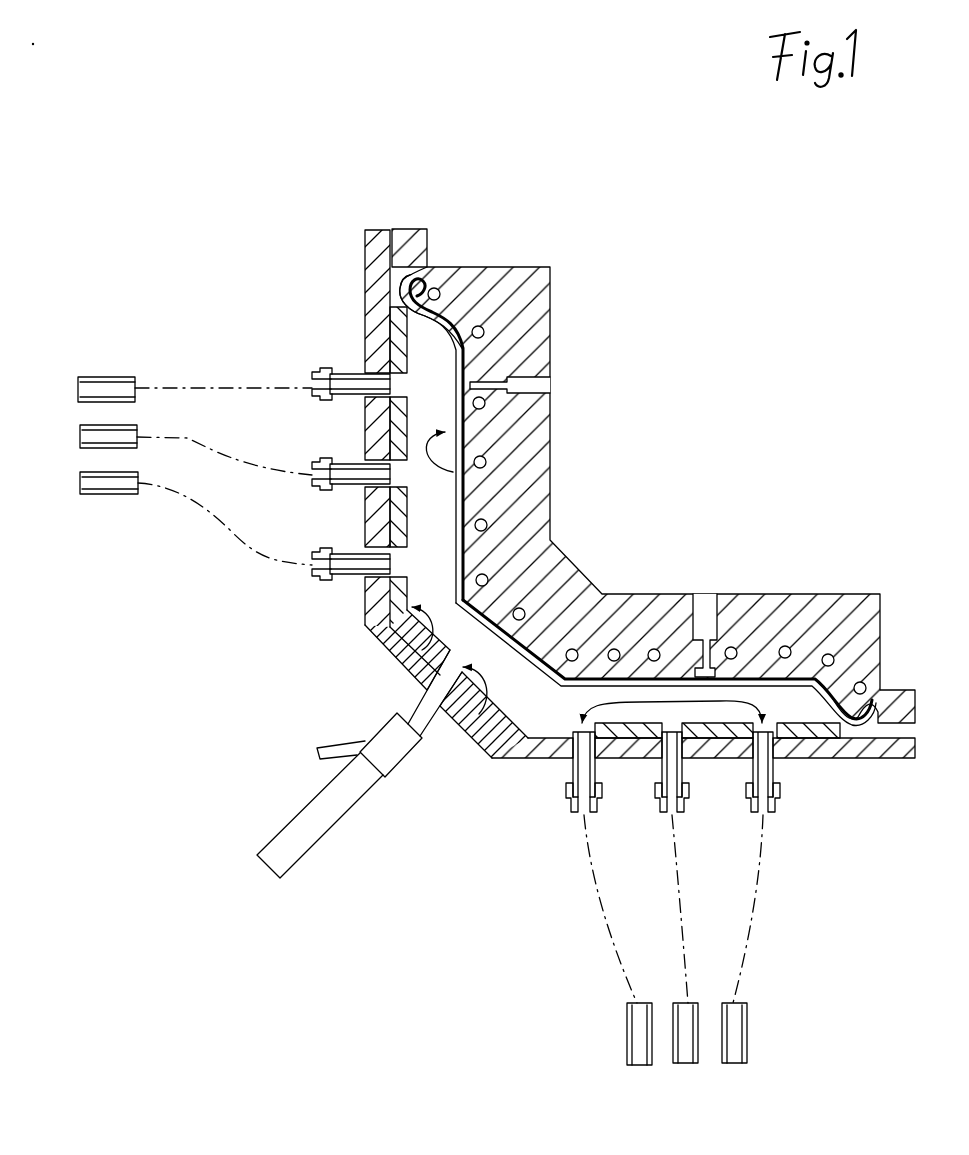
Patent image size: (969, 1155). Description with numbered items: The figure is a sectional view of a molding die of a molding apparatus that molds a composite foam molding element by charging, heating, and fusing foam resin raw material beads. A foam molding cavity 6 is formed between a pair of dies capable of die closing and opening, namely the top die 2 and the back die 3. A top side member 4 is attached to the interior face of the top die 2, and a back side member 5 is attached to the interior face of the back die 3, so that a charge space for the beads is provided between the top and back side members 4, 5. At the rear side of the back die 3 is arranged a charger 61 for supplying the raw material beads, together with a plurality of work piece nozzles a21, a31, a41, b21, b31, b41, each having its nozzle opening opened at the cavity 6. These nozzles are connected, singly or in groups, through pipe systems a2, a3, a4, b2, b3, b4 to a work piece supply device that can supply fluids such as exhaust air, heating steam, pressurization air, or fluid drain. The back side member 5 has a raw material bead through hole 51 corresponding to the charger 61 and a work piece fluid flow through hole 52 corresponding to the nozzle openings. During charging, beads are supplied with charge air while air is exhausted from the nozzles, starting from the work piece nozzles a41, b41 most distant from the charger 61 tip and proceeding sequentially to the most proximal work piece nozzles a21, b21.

The top die 2 is at (545, 310).
The back die 3 is at (372, 301).
The top side member 4 is at (470, 466).
The back side member 5 is at (402, 665).
The foam molding cavity 6 is at (437, 518).
The raw material bead through hole 51 is at (490, 720).
The work piece fluid flow through hole 52 is at (670, 733).
The charger 61 is at (317, 823).
The pipe system a2 is at (585, 858).
The pipe system a3 is at (677, 877).
The pipe system a4 is at (743, 913).
The work piece nozzle a21 is at (598, 783).
The work piece nozzle a31 is at (690, 783).
The work piece nozzle a41 is at (780, 783).
The pipe system b2 is at (173, 498).
The pipe system b3 is at (195, 443).
The pipe system b4 is at (232, 387).
The work piece nozzle b21 is at (333, 585).
The work piece nozzle b31 is at (337, 495).
The work piece nozzle b41 is at (347, 400).